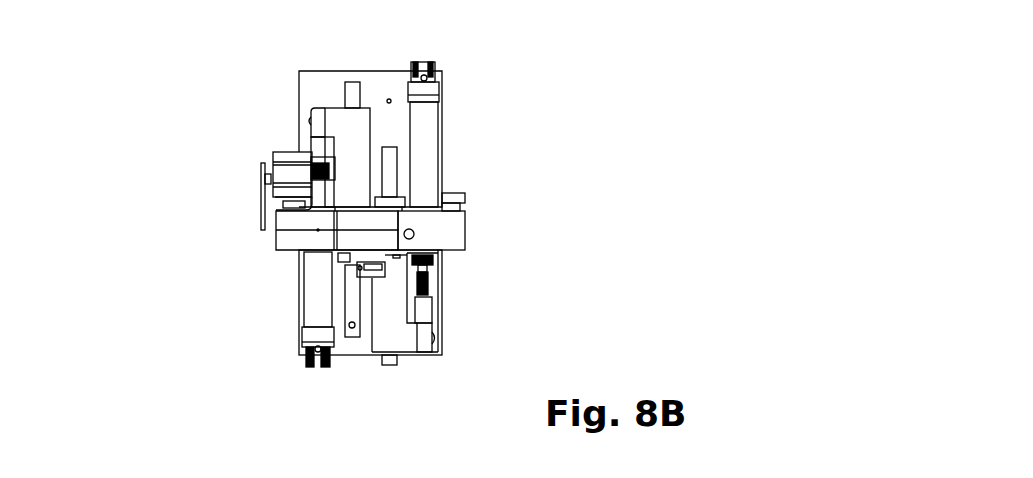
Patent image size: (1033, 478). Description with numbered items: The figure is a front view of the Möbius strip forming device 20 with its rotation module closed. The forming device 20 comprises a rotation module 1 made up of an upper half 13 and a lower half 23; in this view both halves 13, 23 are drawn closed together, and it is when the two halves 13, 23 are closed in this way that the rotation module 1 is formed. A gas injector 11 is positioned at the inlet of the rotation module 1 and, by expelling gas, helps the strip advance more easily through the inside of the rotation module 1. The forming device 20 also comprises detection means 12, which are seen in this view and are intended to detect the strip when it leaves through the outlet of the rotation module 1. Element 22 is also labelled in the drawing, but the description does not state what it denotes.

The rotation module 1 is at (532, 184).
The gas injector 11 is at (546, 273).
The detection means 12 is at (209, 300).
The upper half 13 is at (217, 186).
The Möbius strip forming device 20 is at (489, 116).
The motor 22 is at (198, 137).
The lower half 23 is at (215, 257).